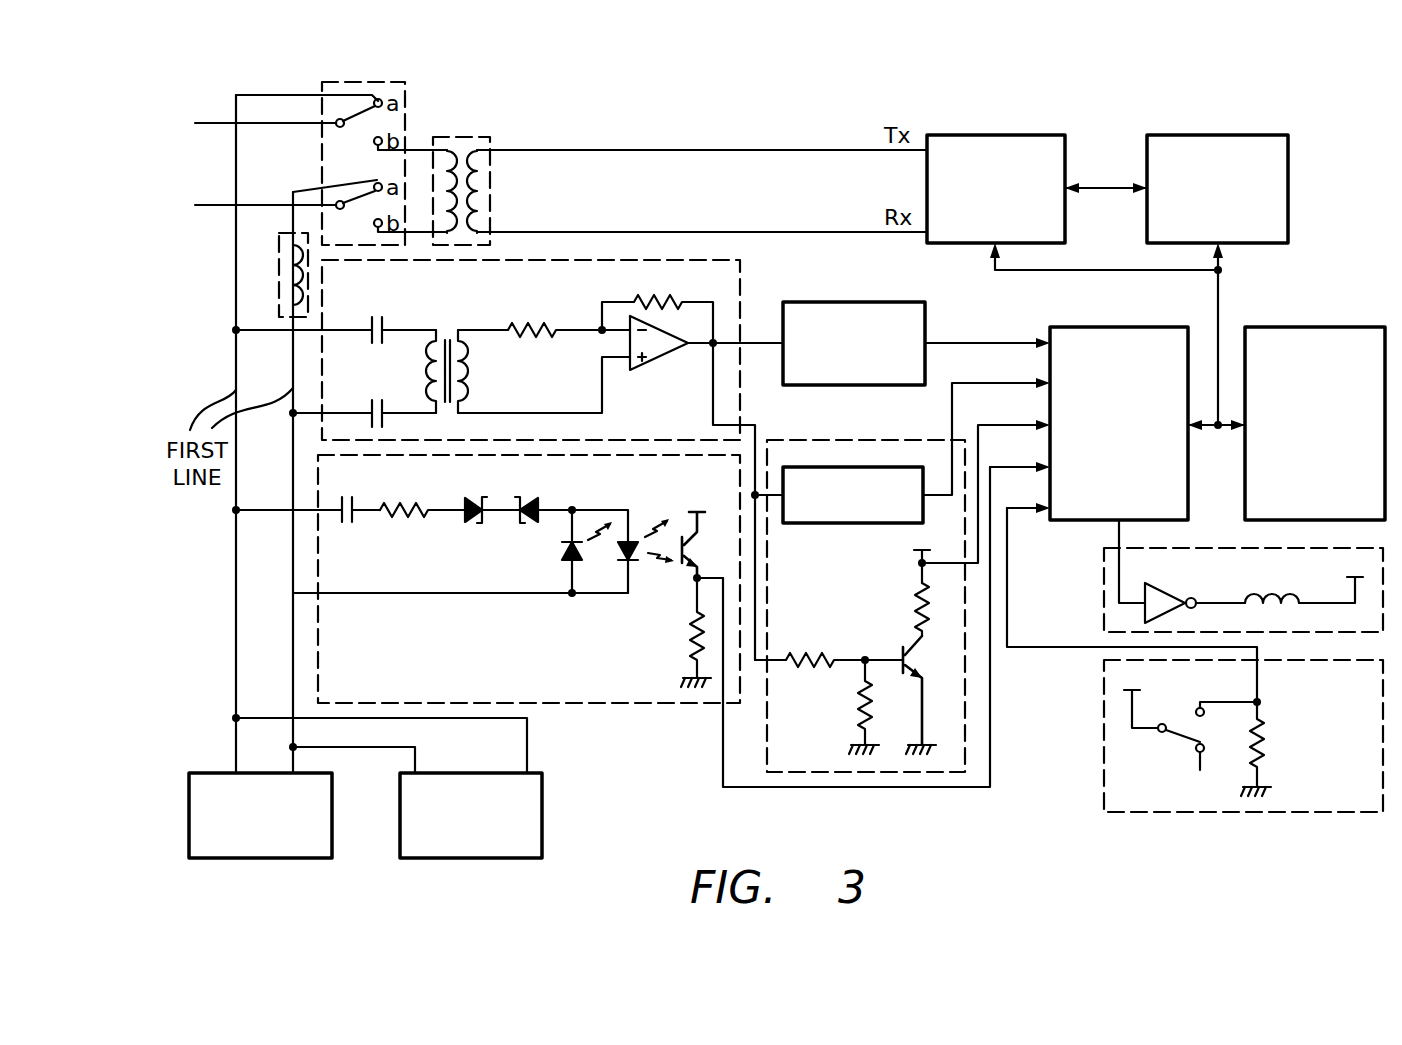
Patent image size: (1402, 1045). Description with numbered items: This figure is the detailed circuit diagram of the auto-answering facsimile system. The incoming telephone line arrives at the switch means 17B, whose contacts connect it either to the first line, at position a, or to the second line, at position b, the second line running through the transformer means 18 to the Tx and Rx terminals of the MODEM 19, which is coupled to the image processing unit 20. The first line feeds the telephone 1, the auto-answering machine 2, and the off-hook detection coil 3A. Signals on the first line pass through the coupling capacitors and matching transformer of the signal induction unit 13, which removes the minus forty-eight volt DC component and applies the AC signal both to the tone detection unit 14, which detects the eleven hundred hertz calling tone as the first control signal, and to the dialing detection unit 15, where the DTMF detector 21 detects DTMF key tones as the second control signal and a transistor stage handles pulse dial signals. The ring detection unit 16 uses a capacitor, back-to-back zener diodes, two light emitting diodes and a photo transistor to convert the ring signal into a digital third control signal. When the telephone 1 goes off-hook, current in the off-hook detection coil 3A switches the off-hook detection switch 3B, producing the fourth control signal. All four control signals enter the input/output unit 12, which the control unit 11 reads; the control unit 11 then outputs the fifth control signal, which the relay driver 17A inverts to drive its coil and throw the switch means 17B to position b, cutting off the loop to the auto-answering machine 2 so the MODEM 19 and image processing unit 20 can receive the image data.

The telephone 1 is at (189, 815).
The auto-answering machine 2 is at (542, 815).
The off-hook detection coil 3A is at (278, 275).
The off-hook detection switch 3B is at (1210, 736).
The control unit 11 is at (1317, 327).
The input/output unit 12 is at (1122, 327).
The signal induction unit 13 is at (522, 460).
The tone detection unit 14 is at (853, 302).
The dialing detection unit 15 is at (900, 575).
The ring detection unit 16 is at (488, 607).
The relay driver 17A is at (1205, 576).
The switch means 17B is at (405, 97).
The transformer means 18 is at (490, 187).
The MODEM 19 is at (995, 135).
The image processing unit 20 is at (1218, 135).
The DTMF detector 21 is at (853, 523).